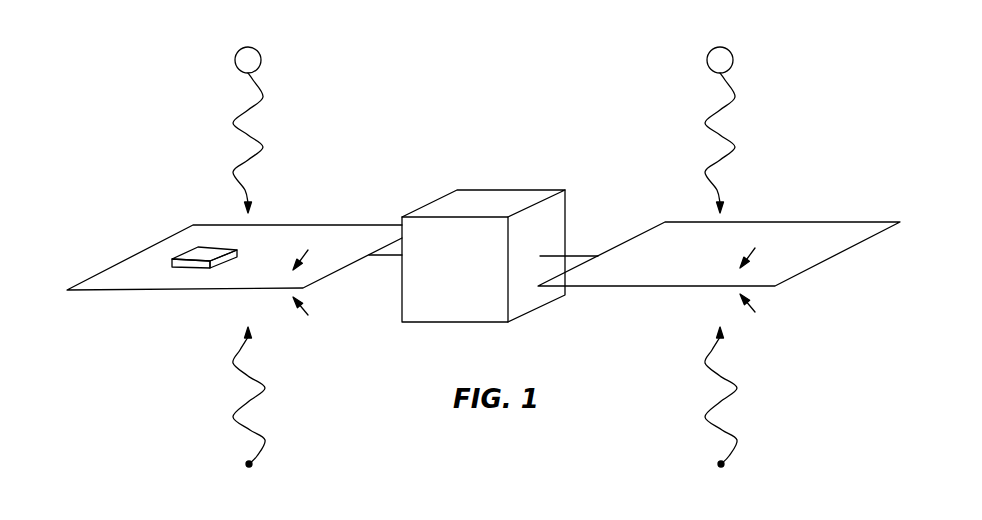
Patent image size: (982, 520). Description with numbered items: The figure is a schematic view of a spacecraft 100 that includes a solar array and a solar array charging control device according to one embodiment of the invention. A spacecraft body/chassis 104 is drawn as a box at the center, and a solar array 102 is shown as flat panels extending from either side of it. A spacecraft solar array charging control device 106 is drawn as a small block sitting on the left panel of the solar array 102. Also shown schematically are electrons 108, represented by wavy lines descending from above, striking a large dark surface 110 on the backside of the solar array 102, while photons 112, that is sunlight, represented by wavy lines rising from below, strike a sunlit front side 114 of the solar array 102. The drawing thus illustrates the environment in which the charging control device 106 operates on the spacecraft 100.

The spacecraft 100 is at (131, 88).
The solar array 102 is at (483, 235).
The spacecraft body/chassis 104 is at (483, 236).
The spacecraft solar array charging control device 106 is at (174, 239).
The electrons 108 is at (515, 115).
The large dark surface 110 is at (546, 250).
The photons 112 is at (526, 397).
The sunlit front side 114 is at (546, 308).